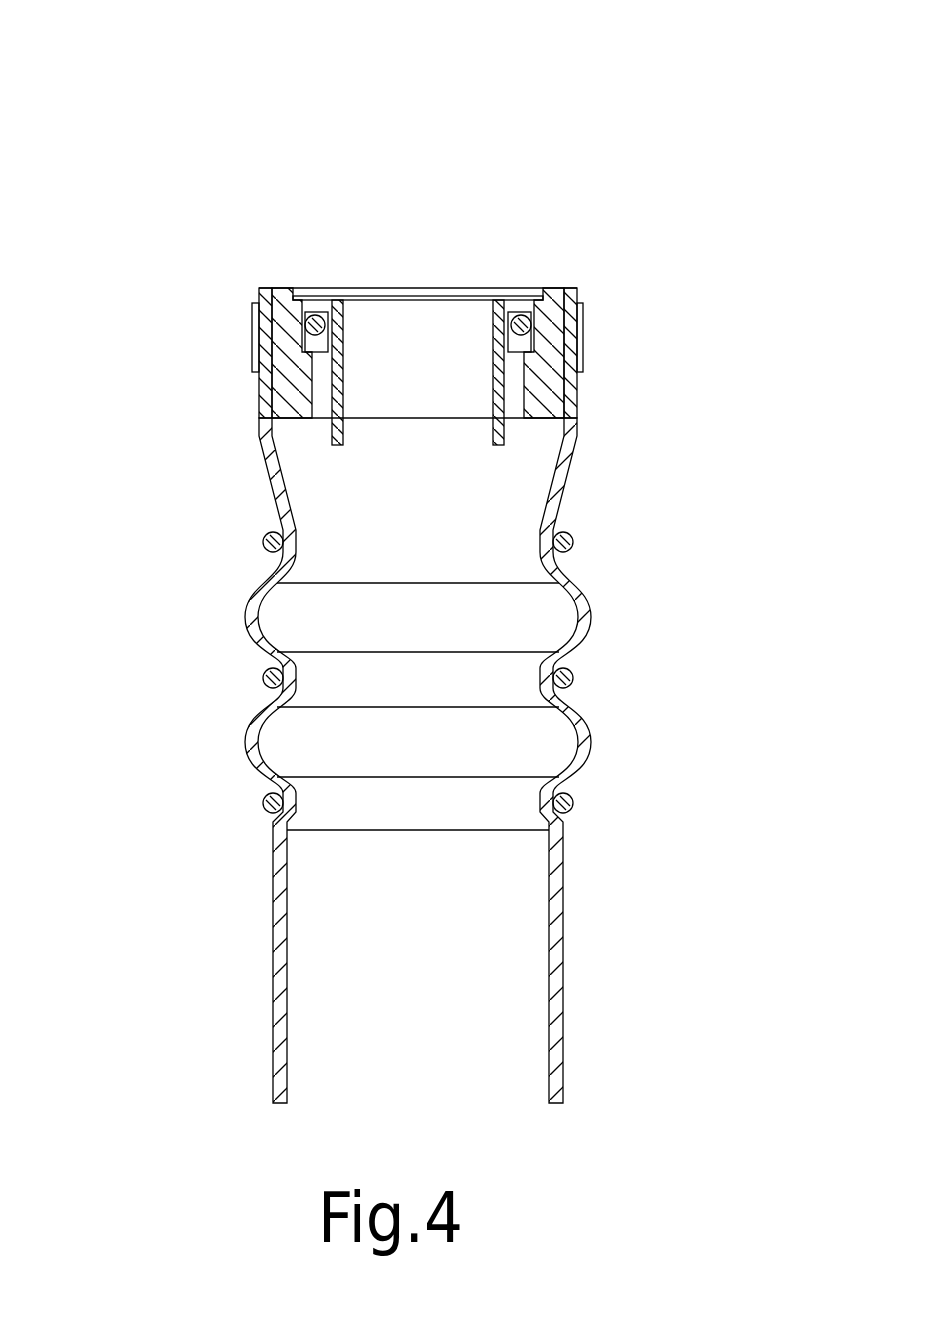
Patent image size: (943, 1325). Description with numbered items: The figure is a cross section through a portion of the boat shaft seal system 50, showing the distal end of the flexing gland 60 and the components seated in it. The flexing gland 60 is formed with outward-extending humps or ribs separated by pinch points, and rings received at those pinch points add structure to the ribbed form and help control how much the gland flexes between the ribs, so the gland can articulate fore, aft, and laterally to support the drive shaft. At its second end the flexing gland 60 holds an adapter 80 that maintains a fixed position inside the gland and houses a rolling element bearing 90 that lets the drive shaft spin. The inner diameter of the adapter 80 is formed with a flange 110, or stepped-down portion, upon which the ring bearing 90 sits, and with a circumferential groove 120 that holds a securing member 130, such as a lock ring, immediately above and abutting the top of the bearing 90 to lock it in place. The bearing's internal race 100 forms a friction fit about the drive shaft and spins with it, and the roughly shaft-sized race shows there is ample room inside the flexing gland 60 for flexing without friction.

The boat shaft seal system 50 is at (95, 105).
The flexing gland 60 is at (562, 985).
The adapter 80 is at (583, 350).
The rolling element bearing 90 is at (313, 307).
The internal race 100 is at (360, 308).
The flange 110 is at (293, 373).
The circumferential groove 120 is at (299, 301).
The securing member 130 is at (410, 300).